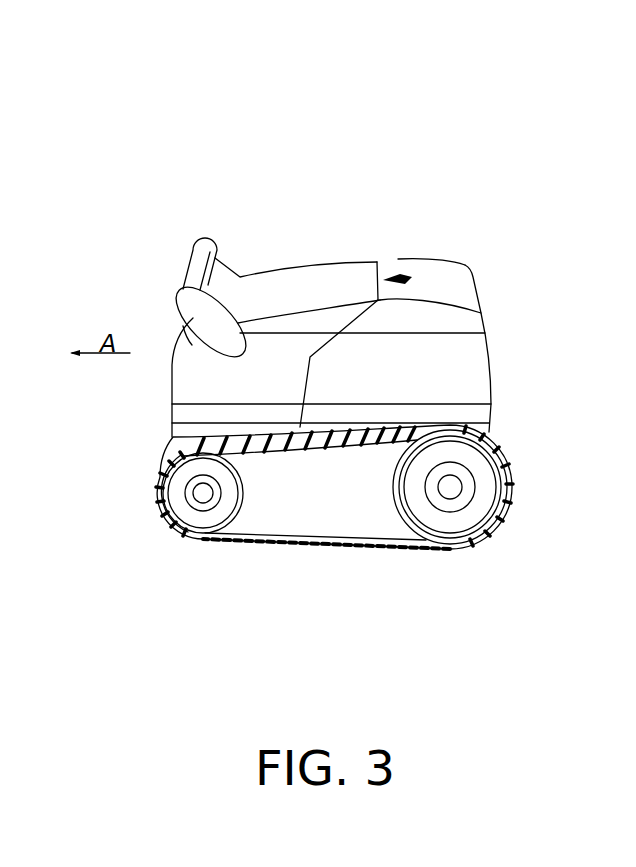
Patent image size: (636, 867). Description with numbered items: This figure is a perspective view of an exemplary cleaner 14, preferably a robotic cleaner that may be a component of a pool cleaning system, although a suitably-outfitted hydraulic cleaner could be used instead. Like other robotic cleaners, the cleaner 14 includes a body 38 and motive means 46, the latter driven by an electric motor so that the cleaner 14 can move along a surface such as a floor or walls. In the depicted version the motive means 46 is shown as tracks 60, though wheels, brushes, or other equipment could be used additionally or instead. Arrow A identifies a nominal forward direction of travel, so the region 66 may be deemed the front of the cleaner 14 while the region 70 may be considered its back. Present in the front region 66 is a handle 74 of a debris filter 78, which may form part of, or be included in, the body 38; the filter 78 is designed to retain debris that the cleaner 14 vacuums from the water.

The cleaner 14 is at (415, 187).
The body 38 is at (506, 340).
The motive means 46 is at (349, 506).
The tracks 60 is at (398, 541).
The region 66 is at (186, 242).
The region 70 is at (503, 235).
The handle 74 is at (203, 242).
The debris filter 78 is at (313, 277).